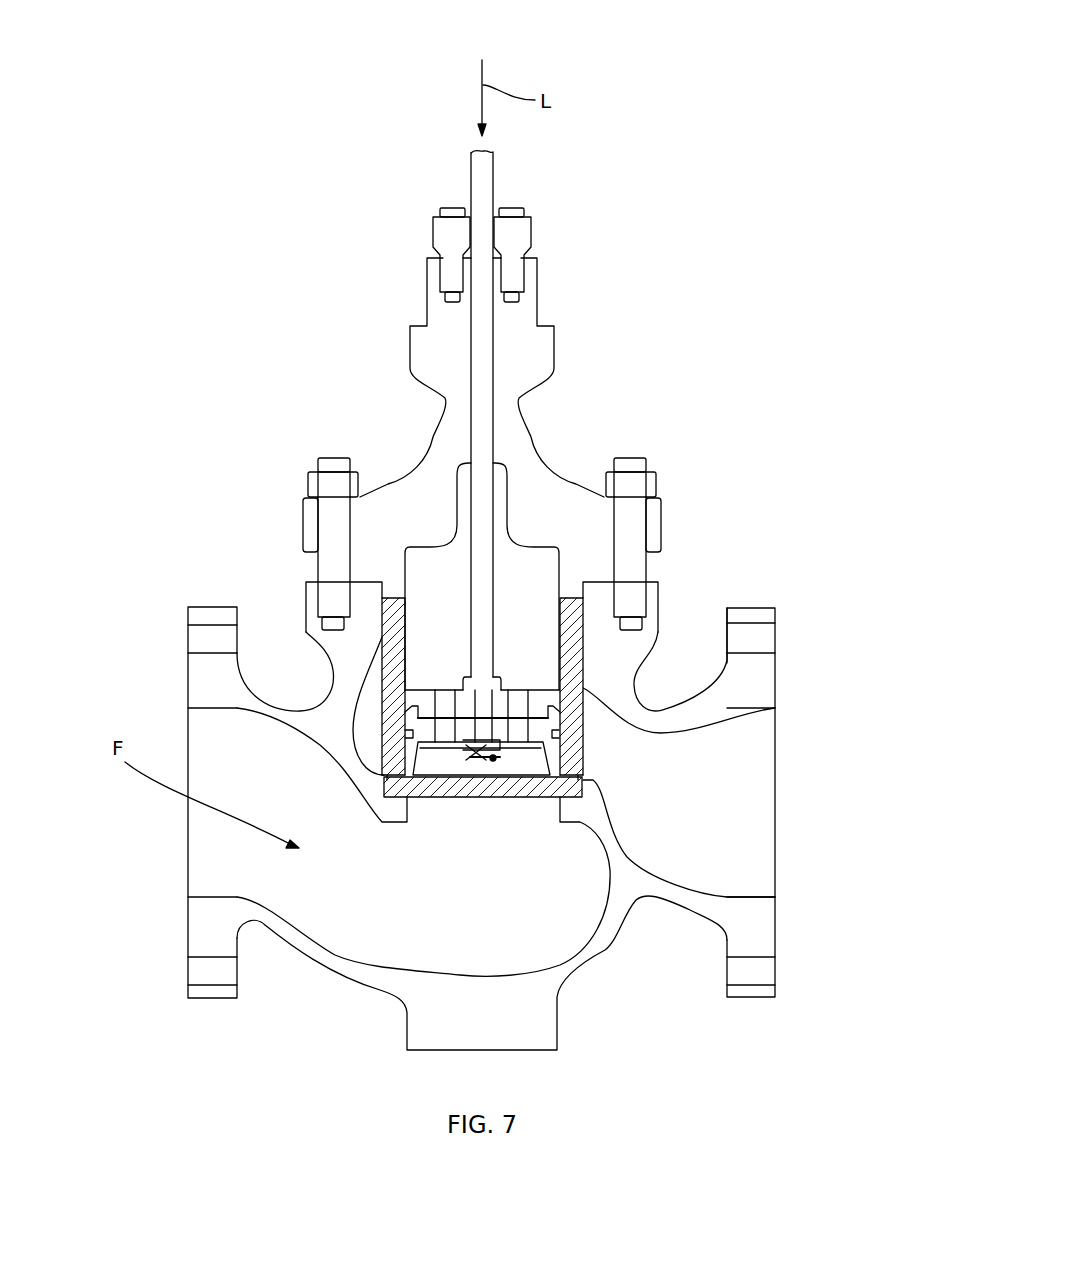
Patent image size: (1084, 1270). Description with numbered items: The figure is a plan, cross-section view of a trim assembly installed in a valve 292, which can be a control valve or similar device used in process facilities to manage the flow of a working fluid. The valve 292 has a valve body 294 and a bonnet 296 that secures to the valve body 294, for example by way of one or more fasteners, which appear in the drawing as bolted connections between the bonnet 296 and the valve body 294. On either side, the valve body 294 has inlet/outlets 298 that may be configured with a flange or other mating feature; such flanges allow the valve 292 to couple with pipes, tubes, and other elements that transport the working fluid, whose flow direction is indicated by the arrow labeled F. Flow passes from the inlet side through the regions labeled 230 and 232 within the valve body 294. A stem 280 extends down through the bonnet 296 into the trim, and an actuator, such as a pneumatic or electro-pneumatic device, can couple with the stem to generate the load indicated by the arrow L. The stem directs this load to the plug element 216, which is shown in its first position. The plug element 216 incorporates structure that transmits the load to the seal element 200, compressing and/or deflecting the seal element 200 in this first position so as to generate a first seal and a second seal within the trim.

The valve 292 is at (725, 50).
The bonnet 296 is at (380, 346).
The valve stem 280 is at (494, 415).
The valve body 294 is at (830, 572).
The plug element 216 is at (516, 676).
The seal element 200 is at (604, 755).
The inlet chamber 230 is at (503, 901).
The outlet passage 232 is at (732, 804).
The inlet/outlets 298 is at (170, 855).